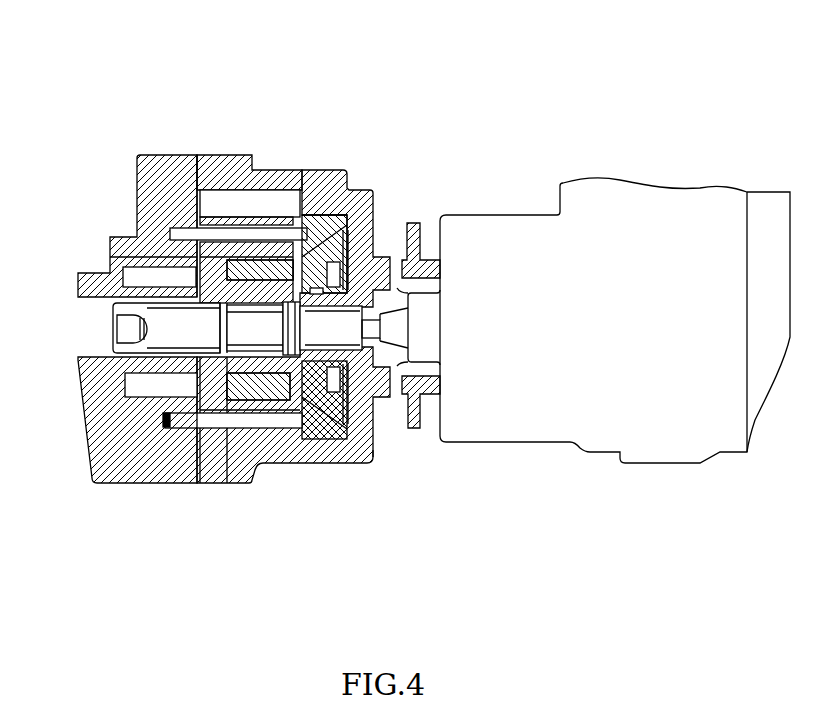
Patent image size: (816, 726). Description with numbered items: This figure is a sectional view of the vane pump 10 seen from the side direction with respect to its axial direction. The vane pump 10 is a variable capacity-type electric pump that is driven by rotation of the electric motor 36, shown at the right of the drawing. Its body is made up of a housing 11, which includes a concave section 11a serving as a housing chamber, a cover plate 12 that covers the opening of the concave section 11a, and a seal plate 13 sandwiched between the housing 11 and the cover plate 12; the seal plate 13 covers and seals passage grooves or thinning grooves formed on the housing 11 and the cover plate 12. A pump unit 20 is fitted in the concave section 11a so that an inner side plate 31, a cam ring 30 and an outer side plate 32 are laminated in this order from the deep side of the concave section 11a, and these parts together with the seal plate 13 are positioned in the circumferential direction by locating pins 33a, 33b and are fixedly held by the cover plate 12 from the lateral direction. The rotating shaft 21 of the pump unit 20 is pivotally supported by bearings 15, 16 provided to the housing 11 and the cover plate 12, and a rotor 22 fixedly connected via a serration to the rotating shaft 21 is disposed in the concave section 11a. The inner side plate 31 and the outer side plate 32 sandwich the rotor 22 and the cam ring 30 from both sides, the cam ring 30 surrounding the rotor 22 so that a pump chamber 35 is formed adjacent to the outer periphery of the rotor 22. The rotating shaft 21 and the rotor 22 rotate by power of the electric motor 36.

The vane pump 10 is at (305, 118).
The housing 11 is at (362, 190).
The concave section 11a is at (317, 210).
The cover plate 12 is at (103, 438).
The seal plate 13 is at (197, 155).
The bearing 15 is at (327, 351).
The bearing 16 is at (162, 353).
The pump unit 20 is at (235, 212).
The rotating shaft 21 is at (113, 308).
The rotor 22 is at (252, 247).
The cam ring 30 is at (260, 440).
The inner side plate 31 is at (375, 465).
The outer side plate 32 is at (110, 256).
The locating pin 33a is at (183, 425).
The locating pin 33b is at (183, 231).
The pump chamber 35 is at (352, 212).
The electric motor 36 is at (517, 212).